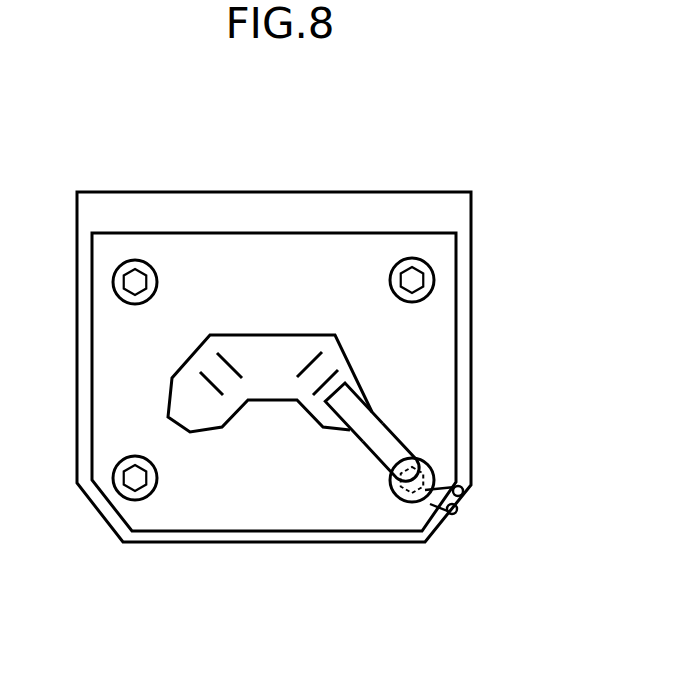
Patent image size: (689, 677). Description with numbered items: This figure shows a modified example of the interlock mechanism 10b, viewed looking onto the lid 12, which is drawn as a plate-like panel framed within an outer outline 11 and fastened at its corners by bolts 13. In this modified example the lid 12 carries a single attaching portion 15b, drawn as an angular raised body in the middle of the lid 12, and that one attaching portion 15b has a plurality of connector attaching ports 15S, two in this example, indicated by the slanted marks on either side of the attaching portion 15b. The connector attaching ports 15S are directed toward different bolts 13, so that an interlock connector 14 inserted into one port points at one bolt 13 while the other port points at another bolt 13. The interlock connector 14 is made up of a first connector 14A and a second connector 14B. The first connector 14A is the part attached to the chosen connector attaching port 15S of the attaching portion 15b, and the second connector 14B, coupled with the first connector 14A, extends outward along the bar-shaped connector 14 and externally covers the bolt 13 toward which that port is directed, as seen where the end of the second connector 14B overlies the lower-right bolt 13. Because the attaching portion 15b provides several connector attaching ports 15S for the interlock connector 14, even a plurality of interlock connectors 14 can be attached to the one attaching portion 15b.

The interlock mechanism 10b is at (492, 164).
The base plate 11 is at (456, 207).
The lid 12 is at (437, 382).
The bolts 13 is at (115, 282).
The interlock connector 14 is at (371, 509).
The first connector 14A is at (383, 435).
The second connector 14B is at (386, 455).
The attaching portion 15b is at (264, 356).
The connector attaching ports 15S is at (183, 406).